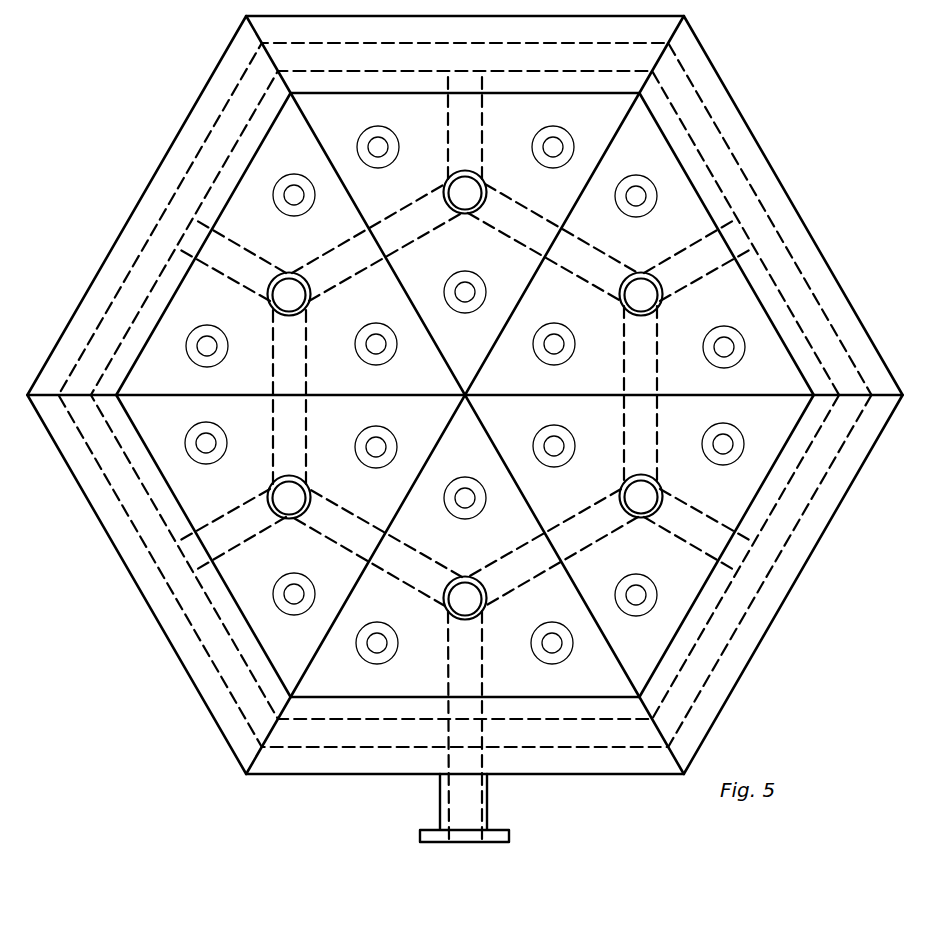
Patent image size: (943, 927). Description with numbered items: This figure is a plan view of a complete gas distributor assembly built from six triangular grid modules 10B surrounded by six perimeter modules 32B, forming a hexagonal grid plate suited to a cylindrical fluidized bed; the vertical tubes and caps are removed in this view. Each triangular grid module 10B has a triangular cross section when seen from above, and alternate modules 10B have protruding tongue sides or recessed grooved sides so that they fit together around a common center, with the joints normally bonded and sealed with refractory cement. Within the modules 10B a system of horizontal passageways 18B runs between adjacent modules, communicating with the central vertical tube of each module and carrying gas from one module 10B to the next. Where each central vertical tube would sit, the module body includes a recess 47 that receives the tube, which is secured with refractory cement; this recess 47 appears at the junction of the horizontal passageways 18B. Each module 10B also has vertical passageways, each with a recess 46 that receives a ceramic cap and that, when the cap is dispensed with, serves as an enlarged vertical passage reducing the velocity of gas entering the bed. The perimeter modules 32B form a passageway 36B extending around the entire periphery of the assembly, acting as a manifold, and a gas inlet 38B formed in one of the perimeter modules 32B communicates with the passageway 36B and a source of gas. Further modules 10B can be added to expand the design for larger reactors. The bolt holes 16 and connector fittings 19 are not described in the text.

The triangular grid module 10B is at (226, 211).
The perimeter module 32B is at (185, 122).
The passageway 36B is at (137, 250).
The horizontal passageways 18B is at (338, 298).
The connector fitting 19 is at (465, 195).
The recess 47 is at (462, 172).
The bolt hole 16 is at (548, 148).
The recess 46 is at (540, 165).
The gas inlet 38B is at (488, 813).